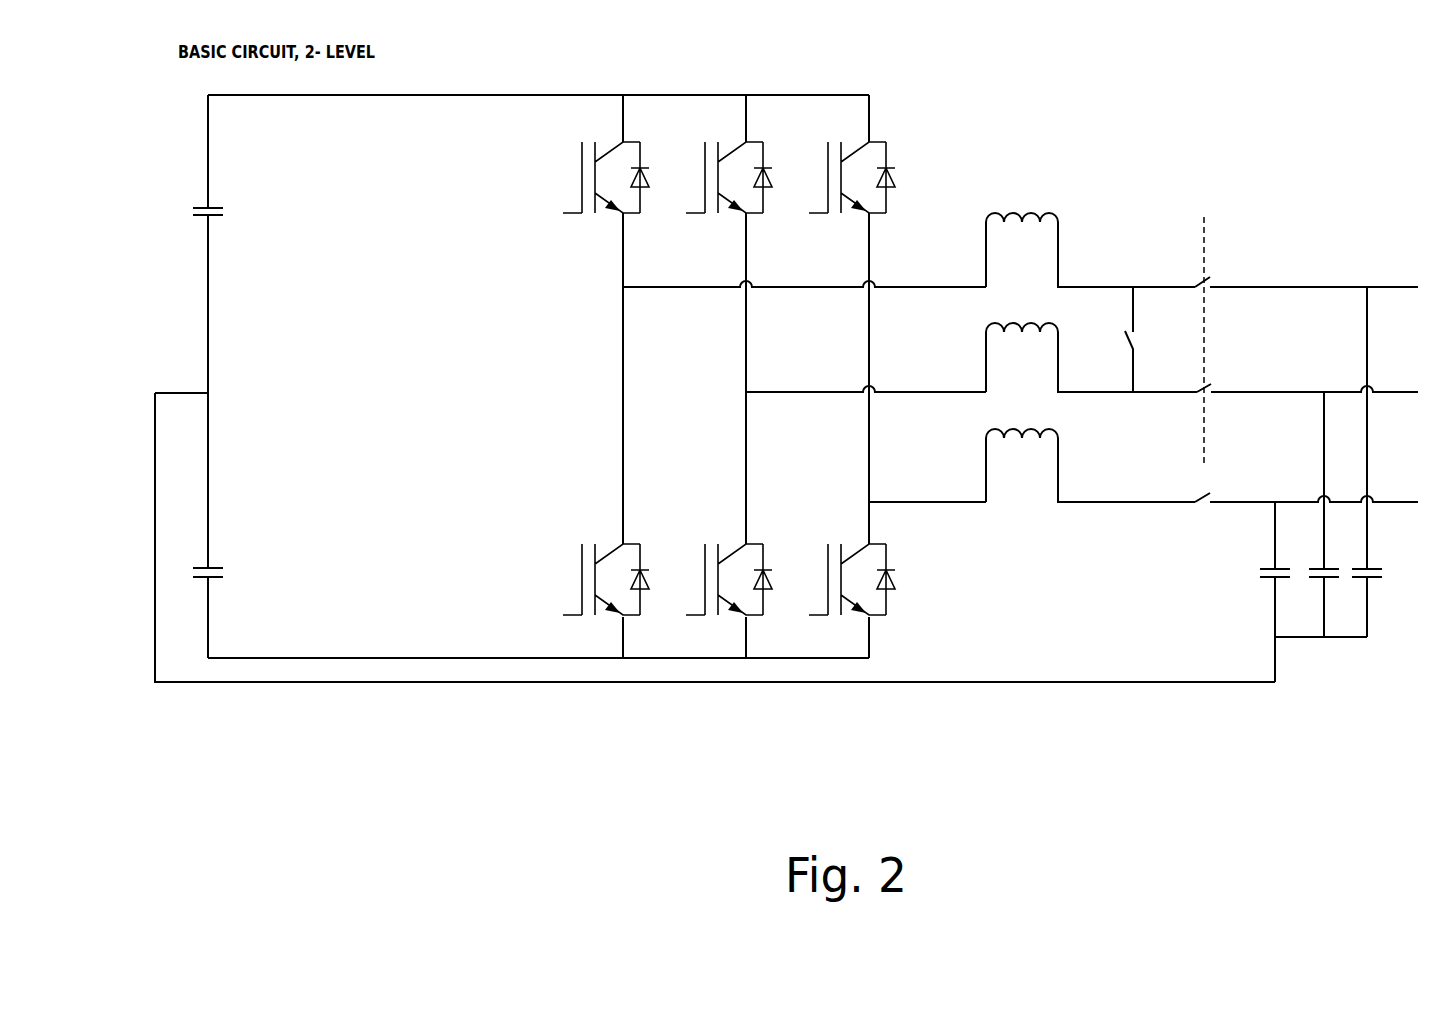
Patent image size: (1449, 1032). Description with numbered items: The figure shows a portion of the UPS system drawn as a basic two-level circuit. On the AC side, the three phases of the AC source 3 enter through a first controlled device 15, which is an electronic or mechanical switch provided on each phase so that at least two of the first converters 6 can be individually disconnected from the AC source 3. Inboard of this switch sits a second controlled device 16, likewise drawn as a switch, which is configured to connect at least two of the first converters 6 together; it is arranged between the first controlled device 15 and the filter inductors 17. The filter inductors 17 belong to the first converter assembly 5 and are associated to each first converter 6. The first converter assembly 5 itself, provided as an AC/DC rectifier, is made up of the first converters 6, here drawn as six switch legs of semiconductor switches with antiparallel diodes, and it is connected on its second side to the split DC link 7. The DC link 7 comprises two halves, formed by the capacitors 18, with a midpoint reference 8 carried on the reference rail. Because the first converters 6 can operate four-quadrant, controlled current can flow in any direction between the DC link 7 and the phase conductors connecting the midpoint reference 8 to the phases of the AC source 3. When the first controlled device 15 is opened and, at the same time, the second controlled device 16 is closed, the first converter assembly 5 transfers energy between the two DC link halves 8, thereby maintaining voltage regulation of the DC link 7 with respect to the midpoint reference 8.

The AC source 3 is at (1433, 703).
The first converter assembly 5 is at (727, 442).
The first converters 6 is at (897, 705).
The DC link 7 is at (552, 705).
The midpoint reference 8 is at (687, 497).
The first controlled device 15 is at (1243, 703).
The second controlled device 16 is at (1167, 703).
The filter inductors 17 is at (1077, 703).
The capacitor 18 is at (197, 209).